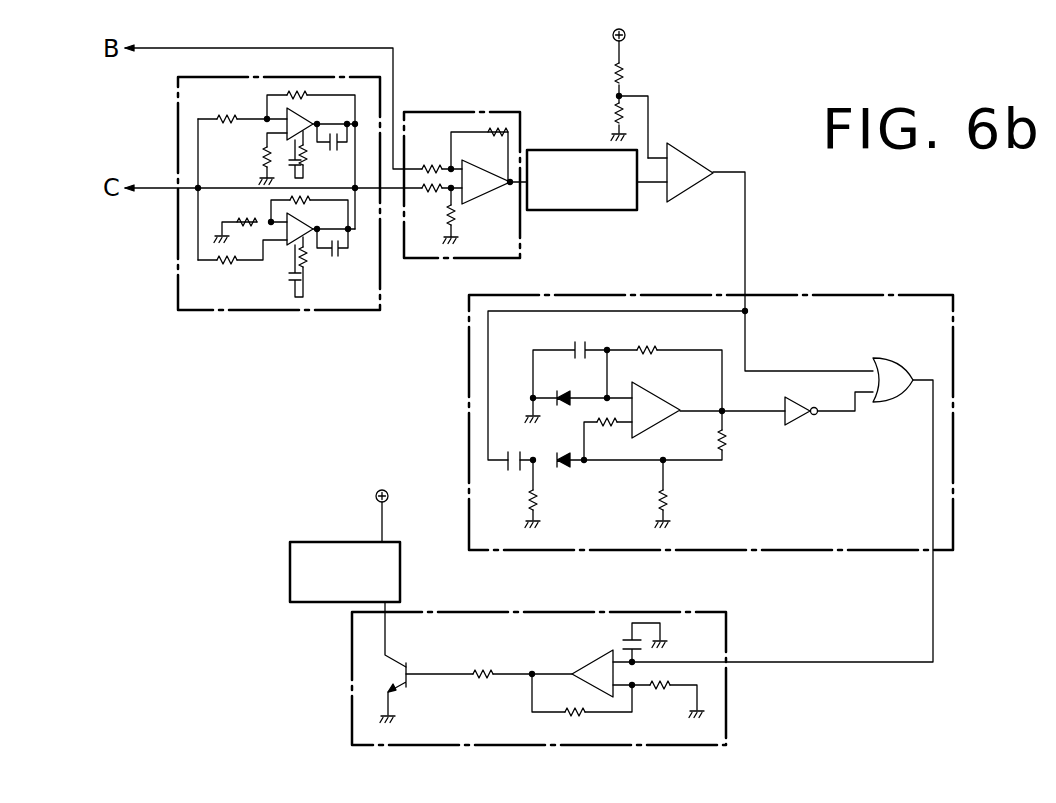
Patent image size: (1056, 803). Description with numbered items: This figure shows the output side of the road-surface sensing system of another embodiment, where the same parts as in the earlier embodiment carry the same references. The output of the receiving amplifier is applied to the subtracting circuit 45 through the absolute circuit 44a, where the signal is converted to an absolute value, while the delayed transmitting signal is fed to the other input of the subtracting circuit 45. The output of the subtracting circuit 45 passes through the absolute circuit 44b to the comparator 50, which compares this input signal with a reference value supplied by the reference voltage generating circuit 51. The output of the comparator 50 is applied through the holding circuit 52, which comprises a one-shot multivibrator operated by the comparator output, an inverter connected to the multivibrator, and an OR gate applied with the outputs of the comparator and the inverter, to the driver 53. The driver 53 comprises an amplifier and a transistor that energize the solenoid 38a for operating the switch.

The absolute circuit 44a is at (333, 310).
The subtracting circuit 45 is at (500, 112).
The absolute circuit 44b is at (588, 210).
The comparator 50 is at (699, 167).
The reference voltage generating circuit 51 is at (625, 75).
The holding circuit 52 is at (826, 295).
The driver 53 is at (530, 612).
The solenoid 38a is at (400, 575).